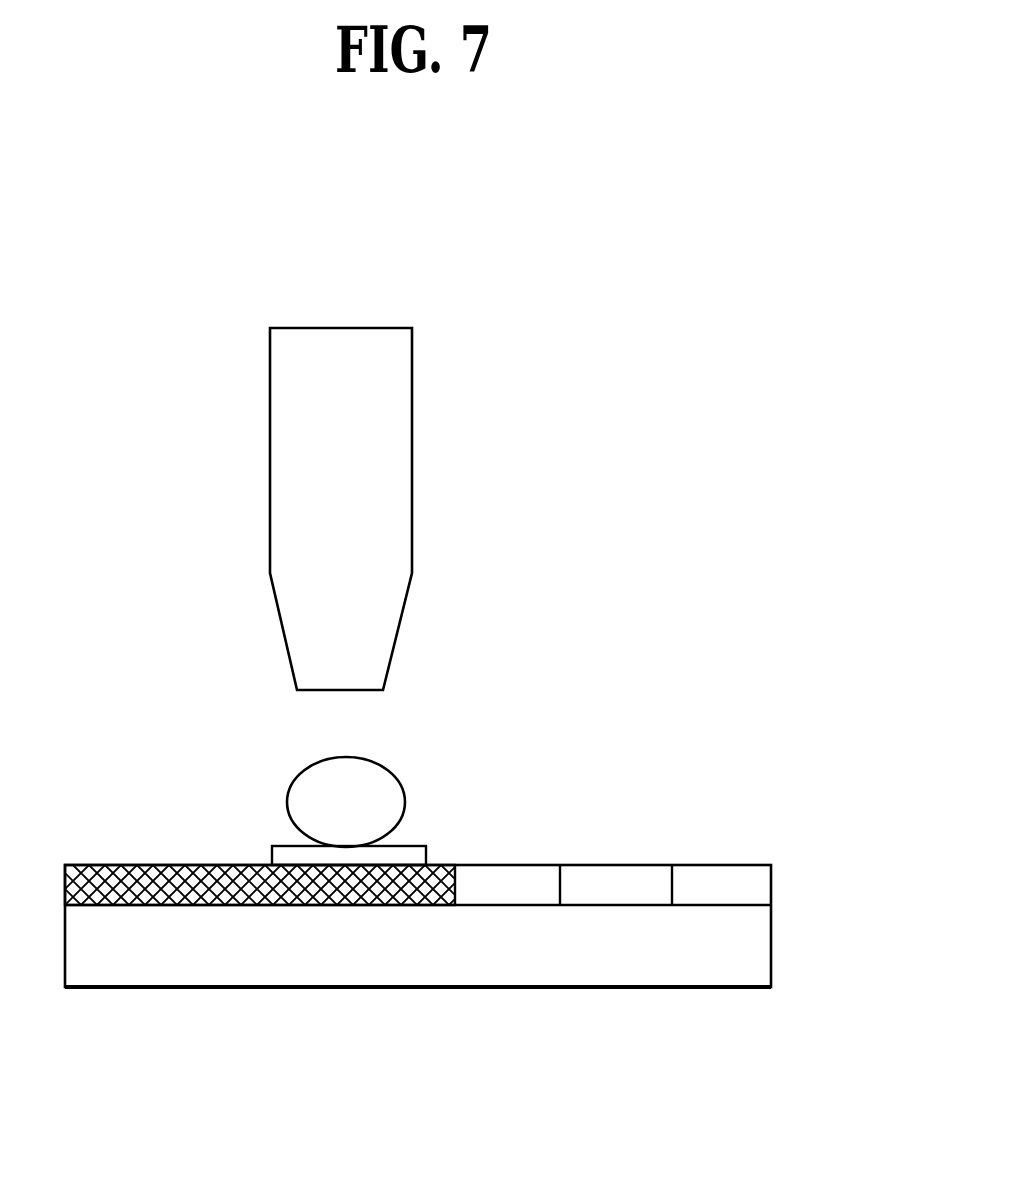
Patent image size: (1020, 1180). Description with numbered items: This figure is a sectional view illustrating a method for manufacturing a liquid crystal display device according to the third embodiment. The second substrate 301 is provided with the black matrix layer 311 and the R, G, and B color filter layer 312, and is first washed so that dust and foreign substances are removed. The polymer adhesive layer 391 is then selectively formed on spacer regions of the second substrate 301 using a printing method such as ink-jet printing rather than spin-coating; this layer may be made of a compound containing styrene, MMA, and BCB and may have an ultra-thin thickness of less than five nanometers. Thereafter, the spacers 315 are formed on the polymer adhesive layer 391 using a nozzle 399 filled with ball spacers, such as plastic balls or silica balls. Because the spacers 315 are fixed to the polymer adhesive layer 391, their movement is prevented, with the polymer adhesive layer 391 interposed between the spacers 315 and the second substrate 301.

The nozzle 399 is at (412, 455).
The second substrate 301 is at (755, 936).
The black matrix layer 311 is at (160, 868).
The color filter layer 312 is at (748, 868).
The polymer adhesive layer 391 is at (412, 855).
The spacers 315 is at (380, 780).